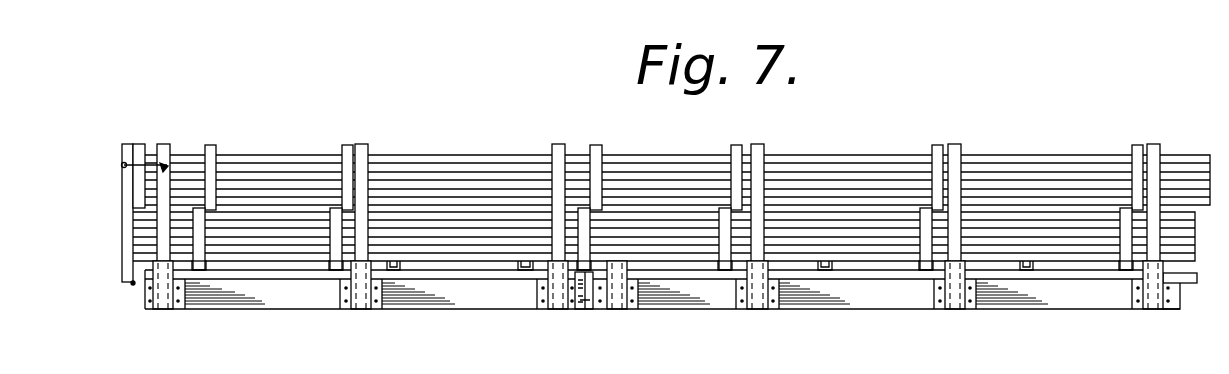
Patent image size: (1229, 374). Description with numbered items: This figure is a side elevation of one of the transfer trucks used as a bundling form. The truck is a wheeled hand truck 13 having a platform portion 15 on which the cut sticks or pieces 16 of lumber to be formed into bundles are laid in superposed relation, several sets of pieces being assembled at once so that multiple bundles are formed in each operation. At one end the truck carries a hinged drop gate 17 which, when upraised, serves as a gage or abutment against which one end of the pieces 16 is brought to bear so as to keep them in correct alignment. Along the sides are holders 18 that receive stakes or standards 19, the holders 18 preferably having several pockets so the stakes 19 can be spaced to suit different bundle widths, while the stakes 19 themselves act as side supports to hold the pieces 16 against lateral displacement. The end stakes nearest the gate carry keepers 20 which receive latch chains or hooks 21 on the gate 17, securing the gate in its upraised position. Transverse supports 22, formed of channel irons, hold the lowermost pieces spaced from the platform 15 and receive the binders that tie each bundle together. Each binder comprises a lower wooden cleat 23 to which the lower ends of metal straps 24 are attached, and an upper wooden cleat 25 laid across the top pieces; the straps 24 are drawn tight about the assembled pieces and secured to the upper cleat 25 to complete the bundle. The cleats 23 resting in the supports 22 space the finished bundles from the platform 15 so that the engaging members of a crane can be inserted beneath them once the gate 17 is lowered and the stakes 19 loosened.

The wheeled hand truck 13 is at (662, 311).
The platform portion 15 is at (488, 280).
The cut sticks or pieces of lumber 16 is at (484, 166).
The hinged drop gate 17 is at (126, 245).
The holders 18 is at (363, 306).
The stakes or standards 19 is at (556, 148).
The keepers 20 is at (168, 170).
The latch chains or hooks 21 is at (147, 153).
The supports 22 is at (331, 271).
The lower wooden cleat or strip 23 is at (586, 309).
The metal straps 24 is at (598, 172).
The upper wooden cleat or strip 25 is at (736, 156).